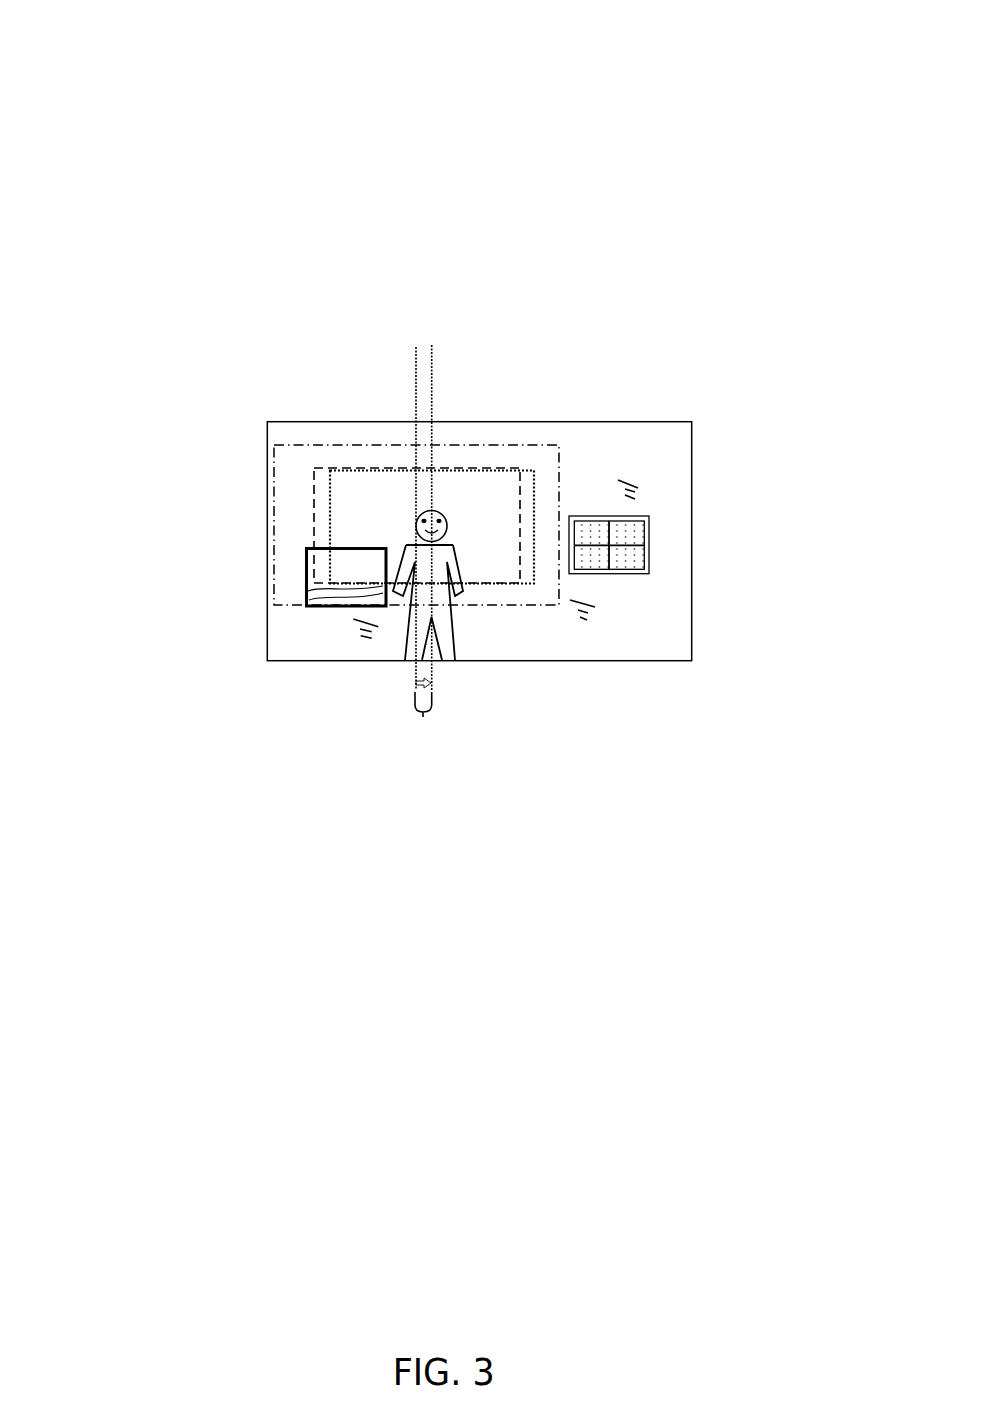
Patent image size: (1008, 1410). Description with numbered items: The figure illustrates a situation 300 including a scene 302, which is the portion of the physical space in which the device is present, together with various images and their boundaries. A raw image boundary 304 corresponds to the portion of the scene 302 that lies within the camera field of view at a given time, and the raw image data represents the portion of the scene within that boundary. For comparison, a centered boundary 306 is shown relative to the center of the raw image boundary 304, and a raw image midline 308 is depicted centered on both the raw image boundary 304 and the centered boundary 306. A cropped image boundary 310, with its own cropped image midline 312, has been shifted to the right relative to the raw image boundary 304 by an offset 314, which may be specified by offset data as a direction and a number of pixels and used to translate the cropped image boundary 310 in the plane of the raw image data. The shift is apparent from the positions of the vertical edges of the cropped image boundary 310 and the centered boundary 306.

The situation 300 is at (770, 57).
The scene 302 is at (296, 422).
The raw image boundary 304 is at (508, 606).
The centered boundary 306 is at (314, 530).
The raw image midline 308 is at (416, 347).
The cropped image boundary 310 is at (527, 469).
The cropped image midline 312 is at (432, 345).
The offset 314 is at (424, 724).